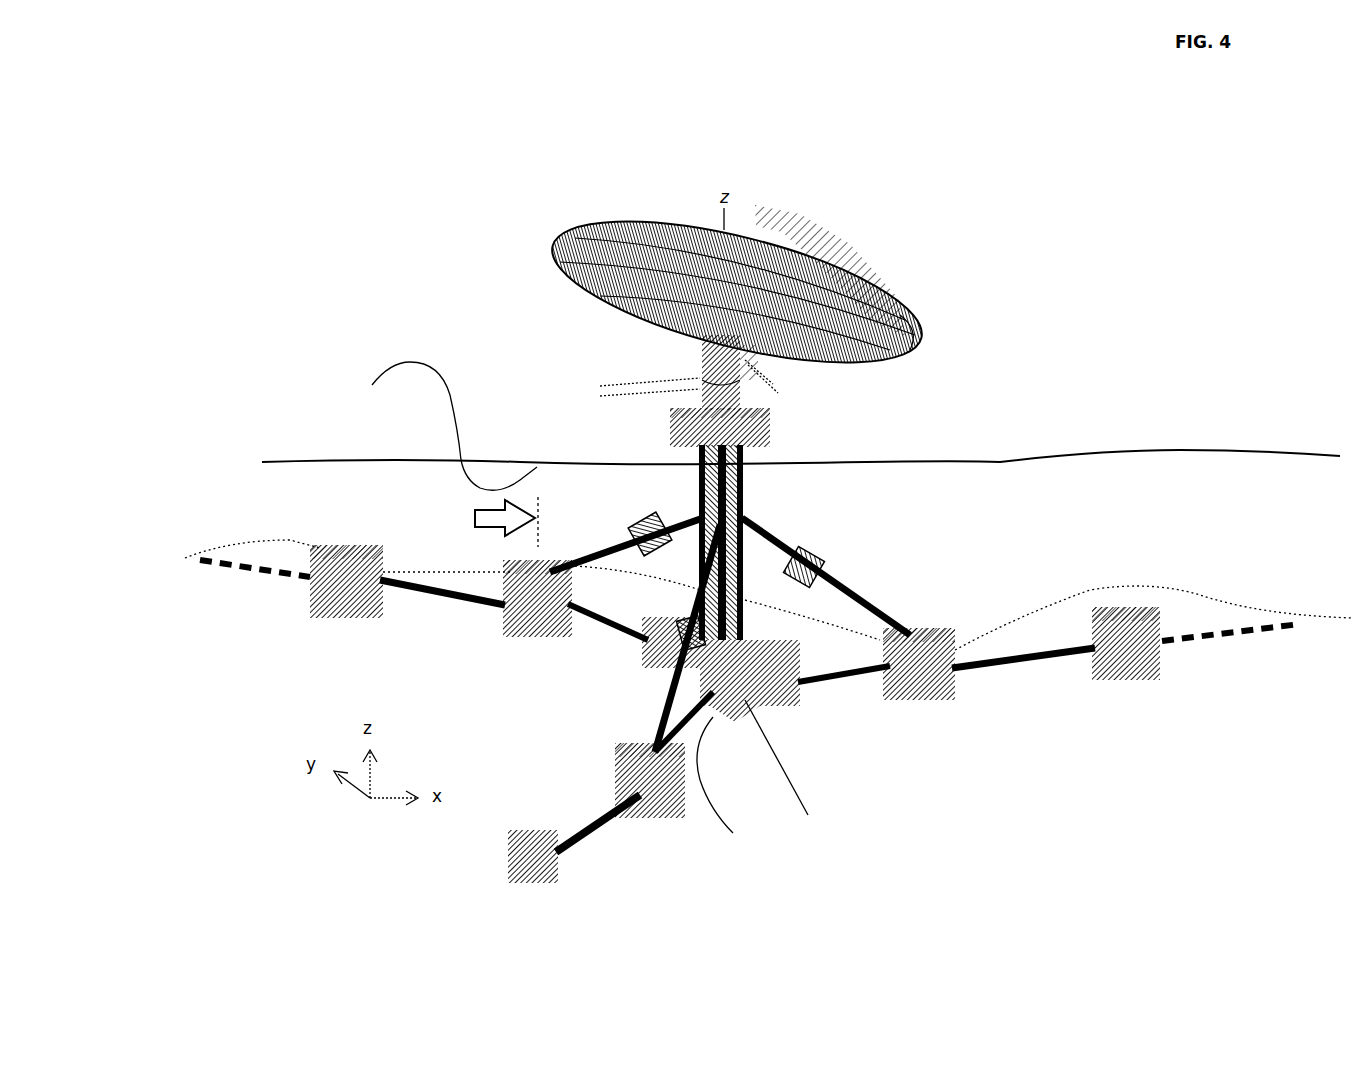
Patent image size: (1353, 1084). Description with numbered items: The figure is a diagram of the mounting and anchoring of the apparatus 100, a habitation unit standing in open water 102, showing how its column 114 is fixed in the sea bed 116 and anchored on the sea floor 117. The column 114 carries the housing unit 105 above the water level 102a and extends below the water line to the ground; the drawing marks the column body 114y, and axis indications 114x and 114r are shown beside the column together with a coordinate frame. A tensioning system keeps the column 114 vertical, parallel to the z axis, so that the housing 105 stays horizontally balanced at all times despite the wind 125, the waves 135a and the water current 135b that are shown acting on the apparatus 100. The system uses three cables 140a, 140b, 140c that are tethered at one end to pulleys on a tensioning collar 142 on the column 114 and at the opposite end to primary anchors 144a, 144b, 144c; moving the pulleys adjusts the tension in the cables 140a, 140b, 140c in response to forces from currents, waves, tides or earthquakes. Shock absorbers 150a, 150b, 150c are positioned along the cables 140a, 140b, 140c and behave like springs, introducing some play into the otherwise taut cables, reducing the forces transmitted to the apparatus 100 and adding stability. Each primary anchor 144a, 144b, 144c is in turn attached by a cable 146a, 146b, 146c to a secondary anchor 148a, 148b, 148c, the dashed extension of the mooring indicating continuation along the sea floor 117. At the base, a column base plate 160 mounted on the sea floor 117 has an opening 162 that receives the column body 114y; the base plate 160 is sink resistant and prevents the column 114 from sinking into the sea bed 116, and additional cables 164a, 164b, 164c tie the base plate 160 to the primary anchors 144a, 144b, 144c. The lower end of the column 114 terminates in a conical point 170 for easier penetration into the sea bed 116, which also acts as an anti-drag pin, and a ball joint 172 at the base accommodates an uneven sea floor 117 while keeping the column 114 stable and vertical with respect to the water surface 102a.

The apparatus 100 is at (536, 270).
The open water 102 is at (1085, 502).
The water level 102a is at (1182, 450).
The housing unit 105 is at (596, 220).
The column 114 is at (700, 403).
The mast x axis 114x is at (700, 360).
The column body 114y is at (812, 478).
The mast rotation axis 114r is at (940, 385).
The sea bed 116 is at (521, 762).
The sea floor 117 is at (298, 540).
The wind 125 is at (1126, 414).
The waves 135a is at (458, 387).
The water current 135b is at (474, 518).
The cable 140a is at (604, 556).
The cable 140b is at (876, 600).
The cable 140c is at (672, 696).
The tensioning collar 142 is at (668, 432).
The primary anchor 144a is at (528, 640).
The primary anchor 144b is at (918, 704).
The primary anchor 144c is at (660, 822).
The cable 146a is at (445, 600).
The cable 146b is at (1077, 662).
The cable 146c is at (595, 842).
The secondary anchor 148a is at (348, 622).
The secondary anchor 148b is at (1152, 682).
The secondary anchor 148c is at (530, 886).
The shock absorber 150a is at (636, 517).
The shock absorber 150b is at (788, 574).
The shock absorber 150c is at (684, 620).
The column base plate 160 is at (802, 650).
The opening 162 is at (792, 766).
The cable 164a is at (596, 628).
The cable 164b is at (874, 684).
The cable 164c is at (662, 729).
The conical point 170 is at (738, 782).
The ball joint 172 is at (742, 652).